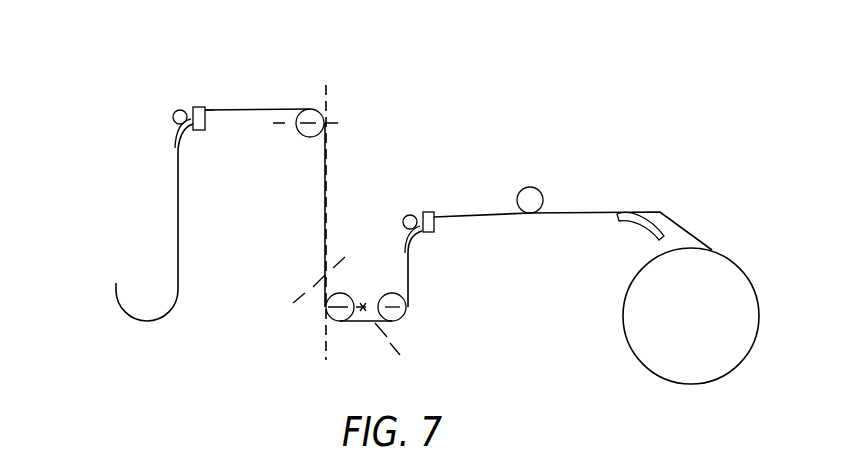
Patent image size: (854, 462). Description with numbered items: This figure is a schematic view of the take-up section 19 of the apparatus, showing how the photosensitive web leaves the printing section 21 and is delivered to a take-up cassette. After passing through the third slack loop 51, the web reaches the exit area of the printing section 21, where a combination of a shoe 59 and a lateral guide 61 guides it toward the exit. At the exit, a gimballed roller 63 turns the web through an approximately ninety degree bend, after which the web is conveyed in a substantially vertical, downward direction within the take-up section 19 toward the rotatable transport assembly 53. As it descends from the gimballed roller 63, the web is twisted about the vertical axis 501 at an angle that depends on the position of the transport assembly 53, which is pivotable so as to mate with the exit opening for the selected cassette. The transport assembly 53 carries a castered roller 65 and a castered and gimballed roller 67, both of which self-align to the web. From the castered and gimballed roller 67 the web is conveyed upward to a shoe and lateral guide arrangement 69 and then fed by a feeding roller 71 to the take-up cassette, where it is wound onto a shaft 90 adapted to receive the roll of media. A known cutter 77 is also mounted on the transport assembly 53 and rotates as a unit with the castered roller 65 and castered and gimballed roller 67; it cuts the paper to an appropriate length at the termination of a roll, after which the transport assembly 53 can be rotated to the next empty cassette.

The take-up section 19 is at (437, 130).
The printing section 21 is at (123, 222).
The third slack loop 51 is at (163, 310).
The rotatable transport assembly 53 is at (515, 263).
The shoe 59 is at (180, 130).
The lateral guide 61 is at (197, 106).
The gimballed roller 63 is at (303, 137).
The castered roller 65 is at (327, 308).
The castered and gimballed roller 67 is at (407, 310).
The shoe and lateral guide arrangement 69 is at (412, 215).
The feeding roller 71 is at (528, 185).
The cutter 77 is at (583, 187).
The shaft 90 is at (757, 292).
The vertical axis 501 is at (323, 87).